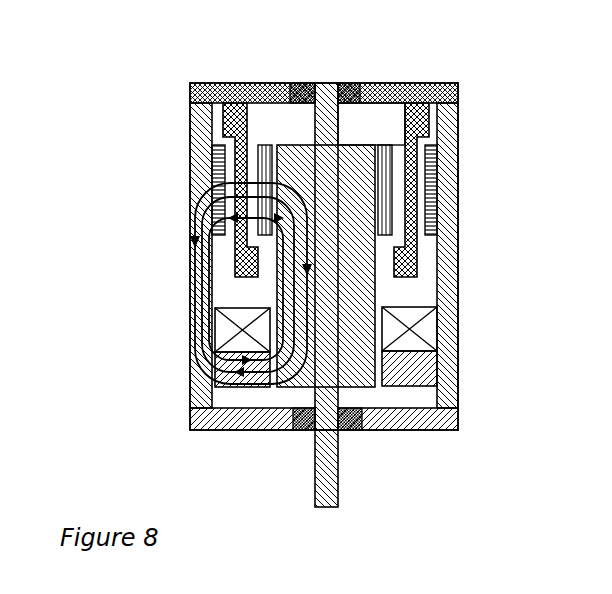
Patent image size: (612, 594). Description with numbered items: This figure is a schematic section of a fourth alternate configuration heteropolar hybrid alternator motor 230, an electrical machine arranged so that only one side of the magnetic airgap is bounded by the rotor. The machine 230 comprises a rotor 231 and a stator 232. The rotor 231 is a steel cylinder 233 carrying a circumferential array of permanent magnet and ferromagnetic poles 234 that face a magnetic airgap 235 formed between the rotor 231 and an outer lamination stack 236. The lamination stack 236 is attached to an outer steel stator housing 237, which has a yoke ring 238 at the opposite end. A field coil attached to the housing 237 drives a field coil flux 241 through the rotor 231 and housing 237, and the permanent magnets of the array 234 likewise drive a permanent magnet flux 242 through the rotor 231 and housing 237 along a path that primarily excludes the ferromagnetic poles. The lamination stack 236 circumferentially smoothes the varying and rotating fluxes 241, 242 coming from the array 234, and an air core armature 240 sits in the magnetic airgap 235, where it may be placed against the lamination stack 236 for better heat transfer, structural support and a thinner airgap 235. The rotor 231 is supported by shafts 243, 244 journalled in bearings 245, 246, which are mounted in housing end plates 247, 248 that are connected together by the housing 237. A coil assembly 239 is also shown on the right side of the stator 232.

The heteropolar hybrid alternator motor 230 is at (117, 90).
The rotor 231 is at (366, 124).
The stator 232 is at (429, 75).
The steel cylinder 233 is at (368, 430).
The permanent magnet and ferromagnetic poles 234 is at (278, 146).
The magnetic airgap 235 is at (253, 138).
The outer lamination stack 236 is at (192, 130).
The outer steel stator housing 237 is at (192, 154).
The yoke ring 238 is at (258, 388).
The right coil assembly 239 is at (422, 306).
The air core armature 240 is at (418, 238).
The field coil flux 241 is at (195, 205).
The permanent magnet flux 242 is at (192, 278).
The shaft 243 is at (340, 492).
The shaft 244 is at (322, 82).
The bearing 245 is at (302, 430).
The bearing 246 is at (343, 82).
The housing end plate 247 is at (433, 430).
The housing end plate 248 is at (458, 84).